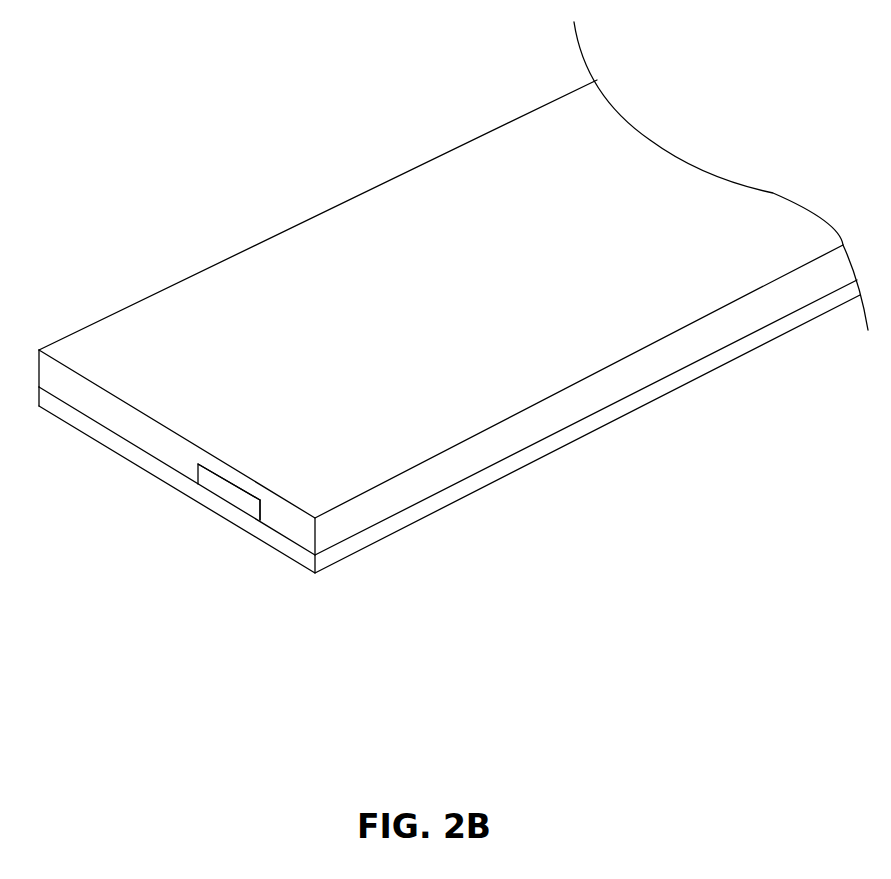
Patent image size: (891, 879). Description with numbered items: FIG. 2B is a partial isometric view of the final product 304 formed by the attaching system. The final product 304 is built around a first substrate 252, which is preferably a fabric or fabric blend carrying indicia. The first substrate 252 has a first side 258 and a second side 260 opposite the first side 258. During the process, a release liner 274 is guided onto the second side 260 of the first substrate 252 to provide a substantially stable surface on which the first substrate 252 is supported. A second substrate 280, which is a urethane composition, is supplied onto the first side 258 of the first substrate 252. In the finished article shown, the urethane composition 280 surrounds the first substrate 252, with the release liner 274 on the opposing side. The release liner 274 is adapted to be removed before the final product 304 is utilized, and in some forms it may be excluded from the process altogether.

The final product 304 is at (453, 329).
The second substrate 280 is at (190, 350).
The release liner 274 is at (301, 553).
The first side 258 is at (217, 473).
The first substrate 252 is at (230, 490).
The second side 260 is at (243, 515).